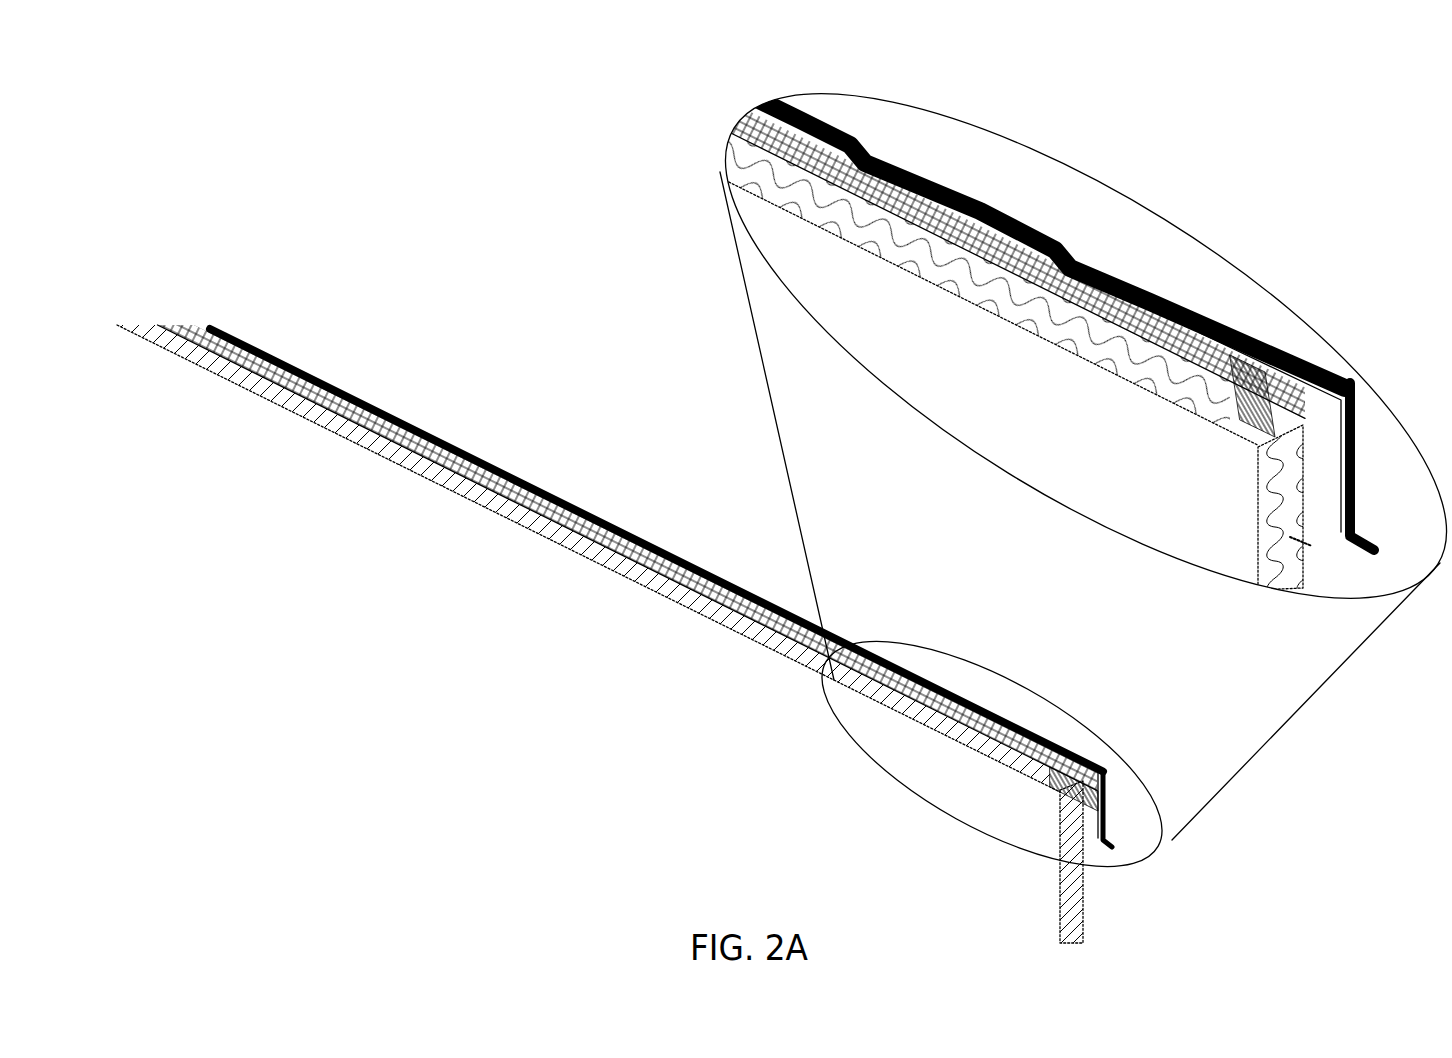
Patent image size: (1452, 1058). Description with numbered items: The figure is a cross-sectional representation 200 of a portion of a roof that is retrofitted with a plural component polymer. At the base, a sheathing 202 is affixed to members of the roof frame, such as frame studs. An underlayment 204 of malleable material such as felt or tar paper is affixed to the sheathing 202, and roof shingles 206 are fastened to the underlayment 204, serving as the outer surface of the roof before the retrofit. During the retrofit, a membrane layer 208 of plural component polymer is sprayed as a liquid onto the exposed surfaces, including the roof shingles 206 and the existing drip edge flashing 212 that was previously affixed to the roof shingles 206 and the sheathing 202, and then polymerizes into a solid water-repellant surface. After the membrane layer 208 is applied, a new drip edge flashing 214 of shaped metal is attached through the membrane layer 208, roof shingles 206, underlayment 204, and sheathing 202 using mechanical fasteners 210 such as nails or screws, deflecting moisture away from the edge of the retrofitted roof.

The representation of a portion of roof 200 is at (520, 361).
The sheathing 202 is at (256, 380).
The underlayment 204 is at (290, 396).
The roof shingles 206 is at (310, 416).
The membrane layer 208 is at (965, 685).
The mechanical fasteners 210 is at (1052, 777).
The drip edge flashing 212 is at (1080, 808).
The drip edge flashing 214 is at (1102, 830).